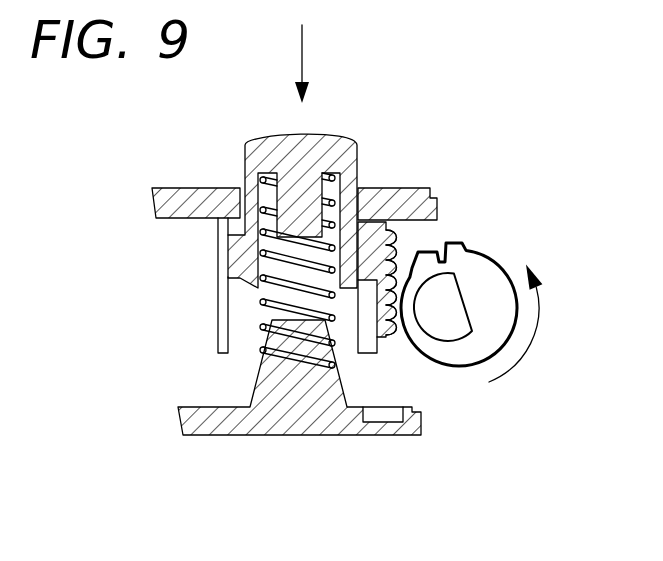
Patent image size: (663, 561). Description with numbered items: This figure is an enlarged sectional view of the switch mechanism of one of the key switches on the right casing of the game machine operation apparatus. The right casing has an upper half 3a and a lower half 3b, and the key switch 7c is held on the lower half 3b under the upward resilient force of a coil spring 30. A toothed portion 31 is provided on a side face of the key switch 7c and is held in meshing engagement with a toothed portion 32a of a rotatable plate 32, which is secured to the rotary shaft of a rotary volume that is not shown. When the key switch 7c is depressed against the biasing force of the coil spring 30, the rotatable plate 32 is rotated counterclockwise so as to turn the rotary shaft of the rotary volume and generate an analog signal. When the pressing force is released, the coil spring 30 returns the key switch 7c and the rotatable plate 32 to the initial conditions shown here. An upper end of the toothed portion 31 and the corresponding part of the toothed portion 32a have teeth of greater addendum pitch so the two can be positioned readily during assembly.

The upper half 3a is at (193, 193).
The lower half 3b is at (242, 423).
The key switch 7c is at (345, 137).
The coil spring 30 is at (258, 300).
The toothed portion 31 is at (390, 338).
The rotatable plate 32 is at (477, 262).
The toothed portion 32a is at (403, 267).